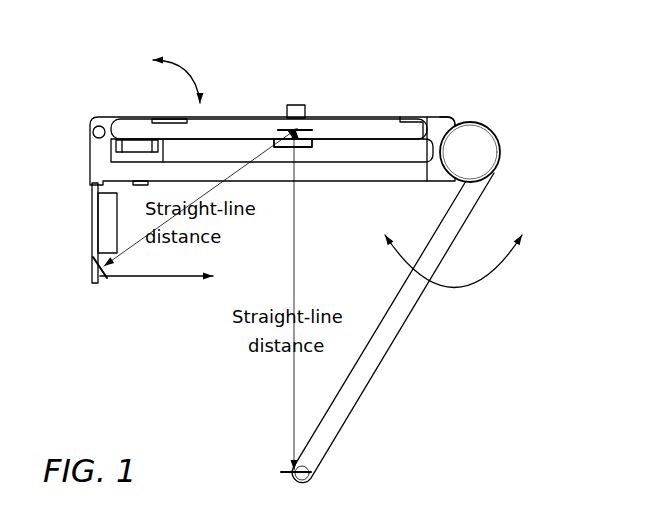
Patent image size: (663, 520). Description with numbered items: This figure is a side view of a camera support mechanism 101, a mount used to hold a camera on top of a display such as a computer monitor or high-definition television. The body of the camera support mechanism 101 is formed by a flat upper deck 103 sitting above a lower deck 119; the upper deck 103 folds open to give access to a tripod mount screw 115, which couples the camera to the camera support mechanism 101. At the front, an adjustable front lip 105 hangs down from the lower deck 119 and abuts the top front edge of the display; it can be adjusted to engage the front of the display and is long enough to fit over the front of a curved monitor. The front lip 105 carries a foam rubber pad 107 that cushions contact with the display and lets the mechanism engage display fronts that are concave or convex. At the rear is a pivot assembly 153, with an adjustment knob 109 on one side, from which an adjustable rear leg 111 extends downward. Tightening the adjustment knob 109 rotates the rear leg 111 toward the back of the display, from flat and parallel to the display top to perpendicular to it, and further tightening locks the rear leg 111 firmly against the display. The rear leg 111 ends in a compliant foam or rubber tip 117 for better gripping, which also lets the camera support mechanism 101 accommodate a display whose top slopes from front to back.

The camera support mechanism 101 is at (425, 58).
The upper deck 103 is at (234, 121).
The adjustable front lip 105 is at (90, 270).
The foam rubber pad 107 is at (98, 212).
The adjustment knob 109 is at (487, 151).
The adjustable rear leg 111 is at (400, 325).
The tripod mount screw 115 is at (297, 105).
The compliant tip 117 is at (285, 475).
The lower deck 119 is at (337, 177).
The pivot assembly 153 is at (497, 115).